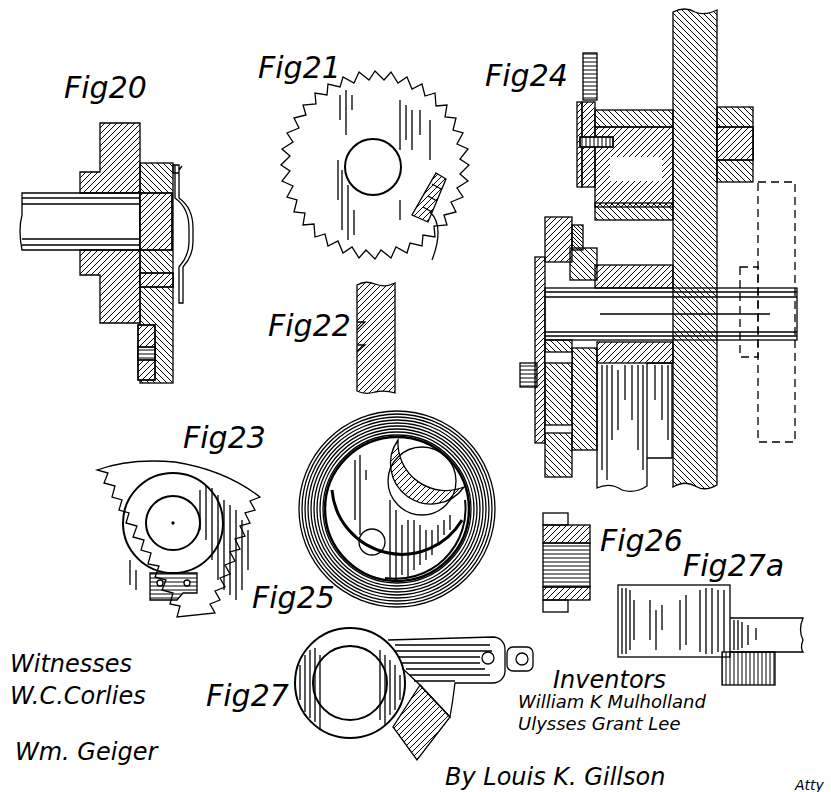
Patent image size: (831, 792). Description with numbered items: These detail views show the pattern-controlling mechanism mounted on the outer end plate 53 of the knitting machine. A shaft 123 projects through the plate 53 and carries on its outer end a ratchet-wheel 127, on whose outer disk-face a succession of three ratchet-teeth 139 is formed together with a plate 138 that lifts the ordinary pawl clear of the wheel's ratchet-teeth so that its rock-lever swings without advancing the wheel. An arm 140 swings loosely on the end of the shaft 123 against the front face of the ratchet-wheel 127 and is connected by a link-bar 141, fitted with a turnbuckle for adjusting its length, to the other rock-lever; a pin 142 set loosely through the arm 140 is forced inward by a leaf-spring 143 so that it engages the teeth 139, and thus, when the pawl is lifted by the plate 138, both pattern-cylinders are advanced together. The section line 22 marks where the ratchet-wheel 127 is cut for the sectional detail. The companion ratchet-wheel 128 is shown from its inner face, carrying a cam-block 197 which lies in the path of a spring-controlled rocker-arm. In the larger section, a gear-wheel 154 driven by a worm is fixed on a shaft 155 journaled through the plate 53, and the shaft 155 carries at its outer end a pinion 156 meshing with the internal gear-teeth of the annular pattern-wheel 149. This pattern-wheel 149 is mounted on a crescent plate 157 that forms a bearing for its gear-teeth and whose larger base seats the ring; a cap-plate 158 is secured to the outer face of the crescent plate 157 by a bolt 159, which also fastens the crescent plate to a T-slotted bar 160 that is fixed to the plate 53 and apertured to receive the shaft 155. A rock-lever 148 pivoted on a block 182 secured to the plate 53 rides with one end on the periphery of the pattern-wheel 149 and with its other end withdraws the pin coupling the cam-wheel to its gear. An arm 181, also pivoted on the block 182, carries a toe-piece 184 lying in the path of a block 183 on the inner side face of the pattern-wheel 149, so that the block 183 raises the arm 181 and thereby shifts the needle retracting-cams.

In FIG. 21, the section line 22 is at (437, 176).
In FIG. 24, the plate 53 is at (713, 23).
In FIG. 20, the shaft 123 is at (60, 255).
In FIG. 20, the ratchet-wheel 127 is at (147, 138).
In FIG. 21, the ratchet-wheel 127 is at (357, 288).
In FIG. 22, the ratchet-wheel 127 is at (376, 337).
In FIG. 23, the ratchet-wheel 128 is at (103, 543).
In FIG. 21, the plate 138 is at (446, 217).
In FIG. 21, the ratchet-teeth 139 is at (432, 260).
In FIG. 20, the arm 140 is at (172, 315).
In FIG. 24, the arm 140 is at (551, 11).
In FIG. 20, the link-bar 141 is at (140, 375).
In FIG. 20, the pin 142 is at (173, 280).
In FIG. 20, the leaf-spring 143 is at (191, 215).
In FIG. 24, the leaf-spring 143 is at (506, 20).
In FIG. 24, the rock-lever 148 is at (583, 83).
In FIG. 24, the pattern-wheel 149 is at (547, 217).
In FIG. 24, the gear-wheel 154 is at (778, 182).
In FIG. 24, the shaft 155 is at (671, 314).
In FIG. 24, the pinion 156 is at (545, 280).
In FIG. 26, the pinion 156 is at (550, 523).
In FIG. 24, the crescent plate 157 is at (560, 403).
In FIG. 25, the crescent plate 157 is at (467, 500).
In FIG. 24, the cap-plate 158 is at (535, 337).
In FIG. 24, the bolt 159 is at (523, 373).
In FIG. 24, the bar 160 is at (678, 413).
In FIG. 24, the arm 181 is at (635, 108).
In FIG. 27, the arm 181 is at (457, 640).
In FIG. 27A, the arm 181 is at (710, 621).
In FIG. 24, the block 182 is at (674, 207).
In FIG. 24, the block 183 is at (583, 240).
In FIG. 27, the toe-piece 184 is at (407, 753).
In FIG. 27A, the toe-piece 184 is at (760, 677).
In FIG. 23, the cam-block 197 is at (183, 597).